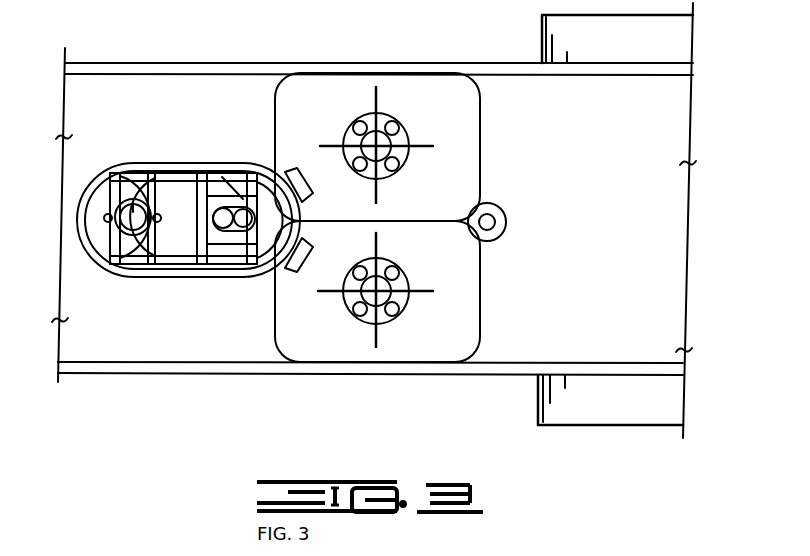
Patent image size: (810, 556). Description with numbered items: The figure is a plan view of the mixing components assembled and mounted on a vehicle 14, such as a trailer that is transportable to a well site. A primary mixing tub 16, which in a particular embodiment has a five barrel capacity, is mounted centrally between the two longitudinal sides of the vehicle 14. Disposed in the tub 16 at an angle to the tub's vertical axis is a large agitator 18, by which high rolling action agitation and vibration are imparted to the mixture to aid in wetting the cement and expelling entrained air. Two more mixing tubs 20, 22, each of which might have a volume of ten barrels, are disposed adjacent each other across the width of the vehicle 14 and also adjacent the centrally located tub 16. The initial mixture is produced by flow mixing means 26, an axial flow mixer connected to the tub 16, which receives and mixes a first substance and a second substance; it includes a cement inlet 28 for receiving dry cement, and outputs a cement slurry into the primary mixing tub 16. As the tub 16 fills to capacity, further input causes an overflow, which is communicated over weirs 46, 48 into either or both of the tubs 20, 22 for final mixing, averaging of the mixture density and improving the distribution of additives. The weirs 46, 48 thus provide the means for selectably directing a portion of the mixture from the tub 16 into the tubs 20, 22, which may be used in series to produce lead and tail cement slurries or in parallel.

The vehicle 14 is at (662, 142).
The primary mixing tub 16 is at (189, 164).
The large agitator 18 is at (232, 233).
The mixing tub 20 is at (480, 300).
The mixing tub 22 is at (480, 150).
The flow mixing means 26 is at (130, 244).
The cement inlet 28 is at (133, 200).
The weir 46 is at (305, 253).
The weir 48 is at (305, 188).